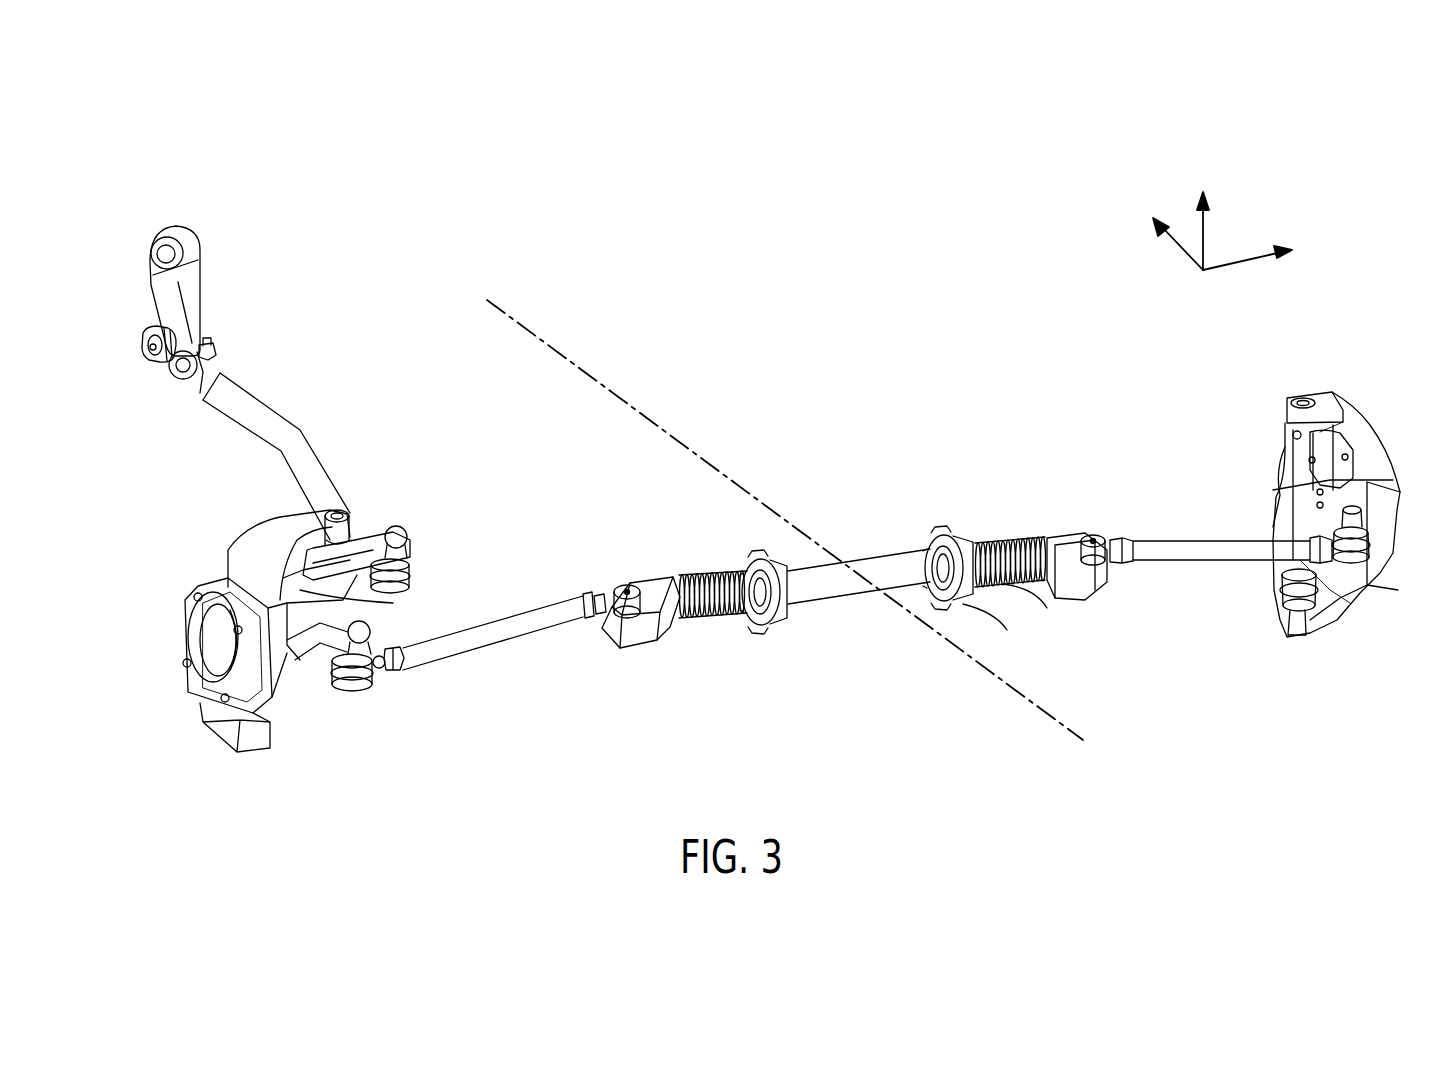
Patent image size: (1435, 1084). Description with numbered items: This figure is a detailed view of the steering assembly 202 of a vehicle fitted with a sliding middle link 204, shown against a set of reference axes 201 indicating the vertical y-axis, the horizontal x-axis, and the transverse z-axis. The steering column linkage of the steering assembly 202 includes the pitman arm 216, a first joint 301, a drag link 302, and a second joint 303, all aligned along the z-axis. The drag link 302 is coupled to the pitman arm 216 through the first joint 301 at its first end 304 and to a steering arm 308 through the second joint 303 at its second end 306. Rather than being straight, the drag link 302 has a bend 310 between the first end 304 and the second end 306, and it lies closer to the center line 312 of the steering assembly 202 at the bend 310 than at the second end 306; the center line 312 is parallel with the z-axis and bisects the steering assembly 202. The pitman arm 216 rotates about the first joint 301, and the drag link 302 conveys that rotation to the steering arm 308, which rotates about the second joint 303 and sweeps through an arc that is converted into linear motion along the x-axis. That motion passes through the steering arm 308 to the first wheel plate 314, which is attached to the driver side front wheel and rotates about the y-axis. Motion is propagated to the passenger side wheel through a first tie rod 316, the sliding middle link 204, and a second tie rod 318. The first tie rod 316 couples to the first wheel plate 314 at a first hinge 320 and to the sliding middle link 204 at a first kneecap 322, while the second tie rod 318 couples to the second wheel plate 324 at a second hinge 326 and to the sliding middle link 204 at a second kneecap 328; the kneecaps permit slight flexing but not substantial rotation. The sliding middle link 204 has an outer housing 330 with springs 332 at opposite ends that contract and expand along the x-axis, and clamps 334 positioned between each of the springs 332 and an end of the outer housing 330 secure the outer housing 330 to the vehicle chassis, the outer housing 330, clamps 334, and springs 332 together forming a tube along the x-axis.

The reference axes 201 is at (1258, 200).
The steering assembly 202 is at (1044, 198).
The sliding middle link 204 is at (848, 632).
The pitman arm 216 is at (190, 290).
The first joint 301 is at (157, 365).
The drag link 302 is at (290, 391).
The second joint 303 is at (410, 553).
The first end 304 is at (183, 382).
The second end 306 is at (364, 527).
The steering arm 308 is at (373, 589).
The bend 310 is at (285, 448).
The center line 312 is at (713, 460).
The first wheel plate 314 is at (225, 568).
The first tie rod 316 is at (533, 623).
The second tie rod 318 is at (1180, 553).
The first hinge 320 is at (345, 680).
The first kneecap 322 is at (618, 587).
The second wheel plate 324 is at (1350, 430).
The second hinge 326 is at (1353, 560).
The second kneecap 328 is at (1077, 533).
The outer housing 330 is at (890, 563).
The springs 332 is at (703, 617).
The clamps 334 is at (743, 556).